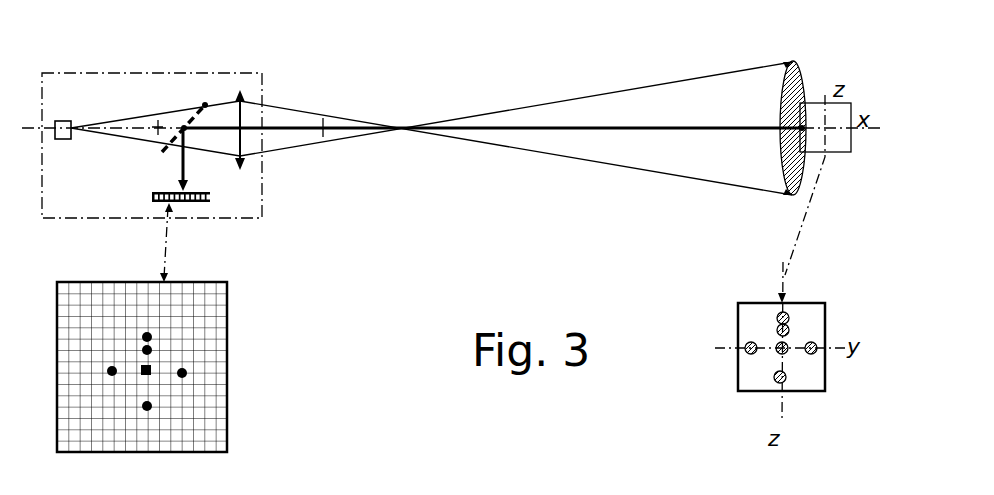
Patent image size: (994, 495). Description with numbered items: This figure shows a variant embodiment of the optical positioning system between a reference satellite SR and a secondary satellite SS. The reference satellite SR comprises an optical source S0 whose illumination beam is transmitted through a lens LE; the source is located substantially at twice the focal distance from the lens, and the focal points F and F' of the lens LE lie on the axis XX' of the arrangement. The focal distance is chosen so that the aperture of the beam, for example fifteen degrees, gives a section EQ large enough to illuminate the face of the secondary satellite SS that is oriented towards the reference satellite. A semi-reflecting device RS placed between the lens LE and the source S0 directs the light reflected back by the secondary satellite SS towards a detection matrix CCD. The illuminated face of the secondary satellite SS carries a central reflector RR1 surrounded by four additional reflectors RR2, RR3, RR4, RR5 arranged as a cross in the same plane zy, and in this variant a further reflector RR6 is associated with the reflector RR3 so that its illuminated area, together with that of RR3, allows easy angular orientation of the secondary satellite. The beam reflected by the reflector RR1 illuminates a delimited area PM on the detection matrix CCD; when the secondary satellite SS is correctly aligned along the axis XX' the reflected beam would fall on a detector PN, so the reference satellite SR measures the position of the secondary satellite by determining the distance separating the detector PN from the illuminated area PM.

The optical source S0 is at (63, 121).
The reference satellite SR is at (150, 73).
The semi-reflecting device RS is at (205, 105).
The lens LE is at (241, 100).
The focal point of lens F is at (153, 139).
The focal distance F' is at (335, 118).
The axis XX' X' is at (461, 143).
The detection matrix CCD is at (180, 202).
The section of the beam EQ is at (792, 62).
The secondary satellite SS is at (823, 152).
The reflector RR1 is at (804, 120).
The additional reflector RR2 is at (751, 345).
The additional reflector RR3 is at (790, 303).
The additional reflector RR4 is at (812, 354).
The additional reflector RR5 is at (782, 384).
The additional reflector RR6 is at (789, 330).
The illuminated area PM is at (147, 372).
The detector PN is at (143, 377).